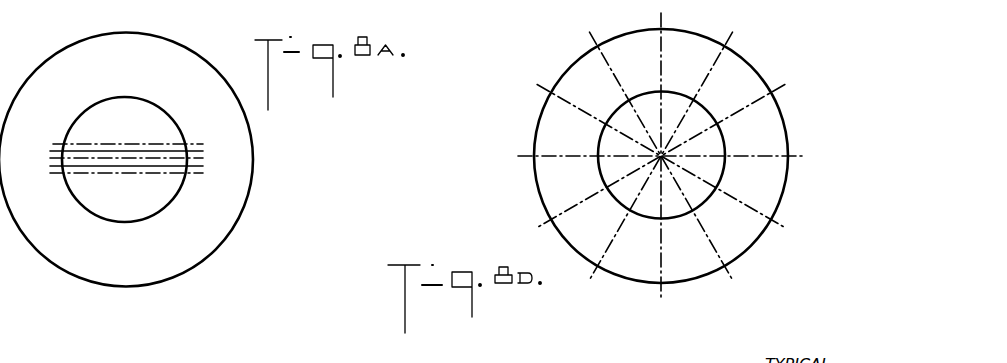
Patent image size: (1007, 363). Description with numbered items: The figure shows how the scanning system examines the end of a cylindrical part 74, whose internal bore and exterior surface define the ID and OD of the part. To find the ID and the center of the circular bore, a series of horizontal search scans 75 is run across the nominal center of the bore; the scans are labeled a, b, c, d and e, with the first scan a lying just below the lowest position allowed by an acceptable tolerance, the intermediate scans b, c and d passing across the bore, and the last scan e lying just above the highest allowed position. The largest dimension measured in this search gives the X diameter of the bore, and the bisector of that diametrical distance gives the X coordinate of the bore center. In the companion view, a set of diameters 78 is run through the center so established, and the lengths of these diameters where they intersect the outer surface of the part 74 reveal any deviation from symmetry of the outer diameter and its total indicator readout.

In FIG. 8A, the cylindrical part 74 is at (197, 262).
In FIG. 8A, the horizontal search scans 75 is at (128, 159).
In FIG. 8D, the set of diameters 78 is at (778, 85).
In FIG. 8A, the scan 75a a is at (50, 173).
In FIG. 8A, the scan 75b b is at (50, 166).
In FIG. 8A, the scan 75c c is at (50, 158).
In FIG. 8A, the scan 75d d is at (50, 151).
In FIG. 8A, the scan 75e e is at (53, 144).